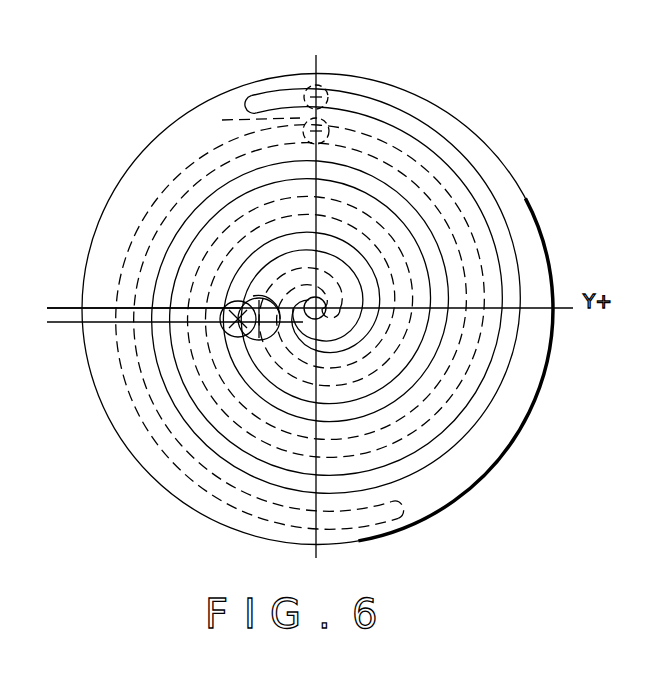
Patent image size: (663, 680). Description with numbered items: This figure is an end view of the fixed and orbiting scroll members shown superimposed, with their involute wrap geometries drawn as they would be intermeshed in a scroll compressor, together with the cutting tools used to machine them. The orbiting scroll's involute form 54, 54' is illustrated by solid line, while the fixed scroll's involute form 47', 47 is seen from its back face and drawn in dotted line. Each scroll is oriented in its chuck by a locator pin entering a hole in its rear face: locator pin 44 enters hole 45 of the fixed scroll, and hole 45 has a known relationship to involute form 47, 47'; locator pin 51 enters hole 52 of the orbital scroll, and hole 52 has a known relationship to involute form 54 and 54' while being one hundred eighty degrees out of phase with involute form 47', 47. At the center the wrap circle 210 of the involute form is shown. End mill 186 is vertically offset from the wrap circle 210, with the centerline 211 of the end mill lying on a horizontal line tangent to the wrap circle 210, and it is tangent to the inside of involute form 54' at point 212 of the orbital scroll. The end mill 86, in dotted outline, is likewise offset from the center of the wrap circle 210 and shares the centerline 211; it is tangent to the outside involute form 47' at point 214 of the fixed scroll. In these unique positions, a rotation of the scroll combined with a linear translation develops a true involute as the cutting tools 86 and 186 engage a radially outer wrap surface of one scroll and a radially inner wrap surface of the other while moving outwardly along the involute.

The locator pin 44 is at (323, 92).
The hole 45 is at (303, 87).
The involute form 47 is at (362, 327).
The involute form 47' is at (374, 331).
The locator pin 51 is at (327, 127).
The hole 52 is at (235, 118).
The involute form 54 is at (376, 291).
The involute form 54' is at (399, 291).
The end mill 86 is at (232, 300).
The end mill 186 is at (253, 296).
The wrap circle 210 is at (325, 300).
The centerline 211 is at (181, 321).
The point 212 is at (233, 333).
The point 214 is at (253, 338).